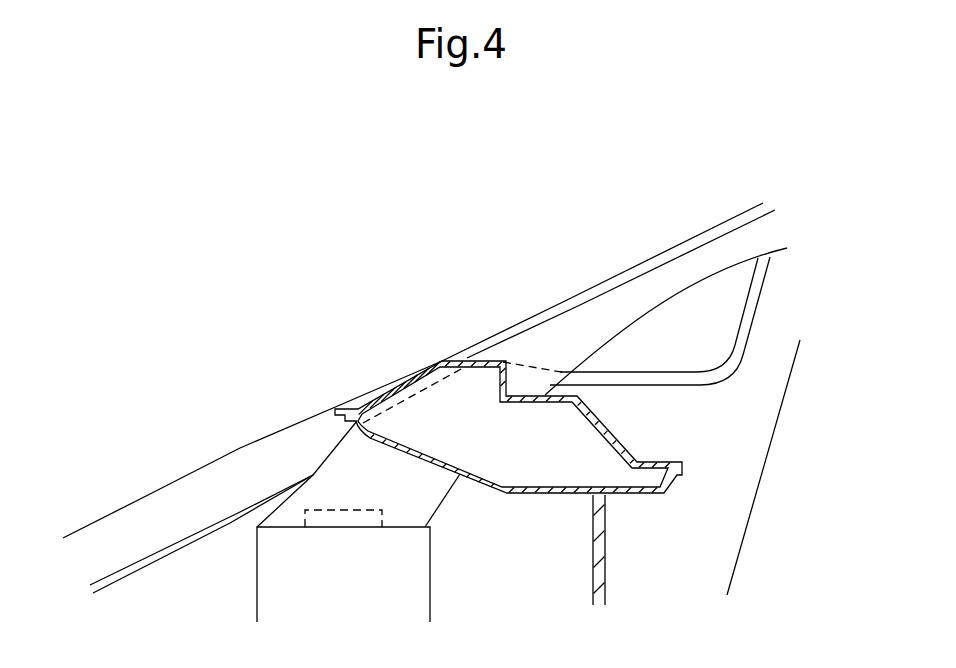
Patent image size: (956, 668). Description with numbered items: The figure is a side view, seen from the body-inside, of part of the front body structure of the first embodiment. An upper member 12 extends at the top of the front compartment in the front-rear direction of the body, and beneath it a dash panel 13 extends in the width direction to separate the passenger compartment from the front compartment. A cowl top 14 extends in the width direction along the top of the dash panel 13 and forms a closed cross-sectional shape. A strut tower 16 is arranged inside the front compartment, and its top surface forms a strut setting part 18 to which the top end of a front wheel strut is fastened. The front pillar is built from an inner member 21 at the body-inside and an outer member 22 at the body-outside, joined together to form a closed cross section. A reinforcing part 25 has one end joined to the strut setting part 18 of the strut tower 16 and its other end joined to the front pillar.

The upper member 12 is at (97, 540).
The dash panel 13 is at (600, 550).
The cowl top 14 is at (450, 360).
The strut tower 16 is at (275, 588).
The strut setting part 18 is at (287, 527).
The inner member 21 is at (713, 267).
The outer member 22 is at (722, 225).
The reinforcing part 25 is at (425, 497).